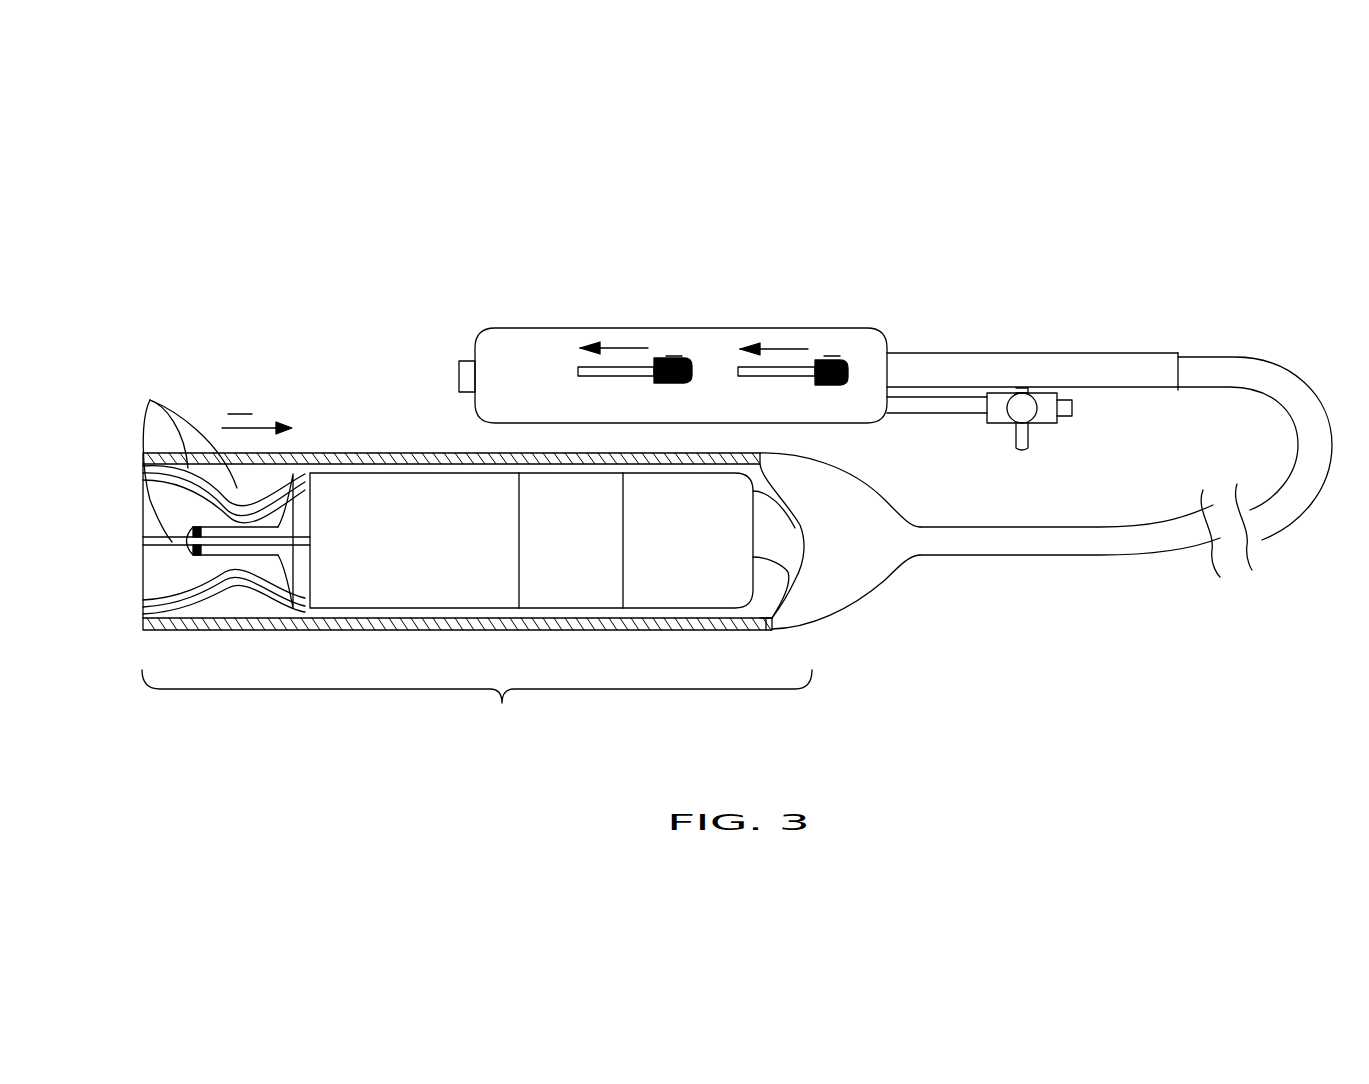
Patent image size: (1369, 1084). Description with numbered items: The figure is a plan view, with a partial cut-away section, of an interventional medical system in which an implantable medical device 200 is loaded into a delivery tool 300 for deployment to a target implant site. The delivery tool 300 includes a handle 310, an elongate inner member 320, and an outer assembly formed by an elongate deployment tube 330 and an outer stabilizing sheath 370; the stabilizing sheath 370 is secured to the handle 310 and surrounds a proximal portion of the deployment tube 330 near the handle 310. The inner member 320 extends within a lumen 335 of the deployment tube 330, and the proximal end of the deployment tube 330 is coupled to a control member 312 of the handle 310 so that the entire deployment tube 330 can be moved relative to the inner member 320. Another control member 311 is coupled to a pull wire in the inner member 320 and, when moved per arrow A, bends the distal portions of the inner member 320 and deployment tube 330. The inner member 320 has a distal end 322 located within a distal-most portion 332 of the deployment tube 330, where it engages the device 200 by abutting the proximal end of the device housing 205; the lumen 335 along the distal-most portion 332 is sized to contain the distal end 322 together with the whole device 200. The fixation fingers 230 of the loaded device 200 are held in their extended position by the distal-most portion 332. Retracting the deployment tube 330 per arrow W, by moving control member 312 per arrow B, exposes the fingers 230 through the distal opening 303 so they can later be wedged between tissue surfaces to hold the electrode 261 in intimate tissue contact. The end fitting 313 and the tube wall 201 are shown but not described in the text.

The delivery tool 300 is at (1030, 229).
The handle 310 is at (794, 354).
The control member 311 is at (668, 383).
The control member 312 is at (830, 385).
The handle end fitting 313 is at (459, 378).
The stabilizing sheath 370 is at (957, 372).
The deployment tube 330 is at (1265, 374).
The inner member 320 is at (788, 540).
The distal end 322 is at (788, 560).
The lumen 335 is at (757, 605).
The distal-most portion 332 is at (477, 702).
The implantable medical device 200 is at (430, 472).
The sheath wall 201 is at (287, 622).
The device housing 205 is at (455, 557).
The fixation fingers 230 is at (214, 459).
The electrode 261 is at (187, 555).
The distal opening 303 is at (160, 588).